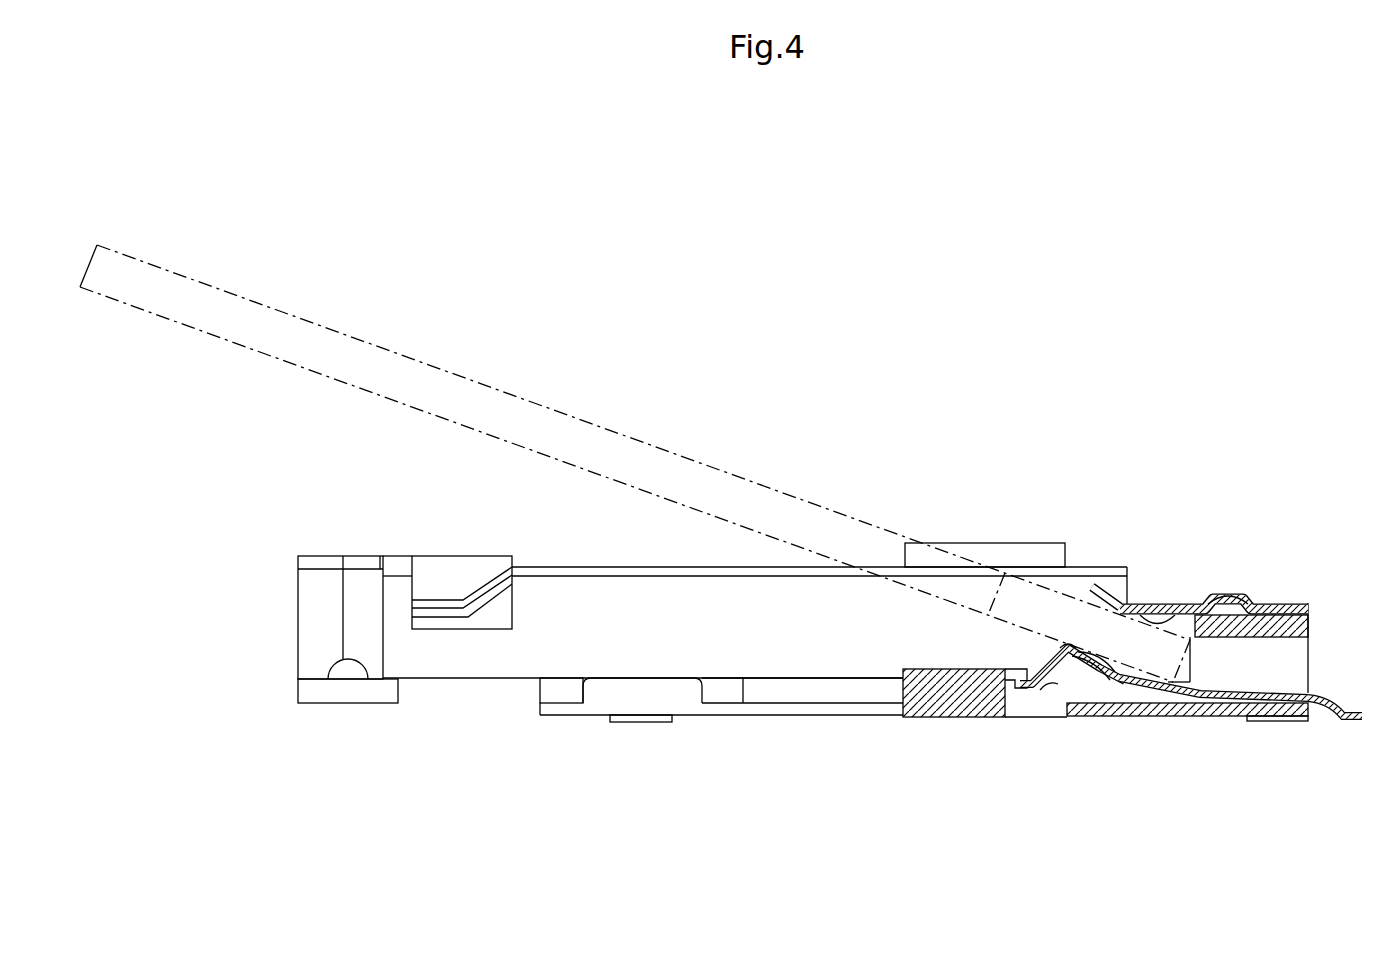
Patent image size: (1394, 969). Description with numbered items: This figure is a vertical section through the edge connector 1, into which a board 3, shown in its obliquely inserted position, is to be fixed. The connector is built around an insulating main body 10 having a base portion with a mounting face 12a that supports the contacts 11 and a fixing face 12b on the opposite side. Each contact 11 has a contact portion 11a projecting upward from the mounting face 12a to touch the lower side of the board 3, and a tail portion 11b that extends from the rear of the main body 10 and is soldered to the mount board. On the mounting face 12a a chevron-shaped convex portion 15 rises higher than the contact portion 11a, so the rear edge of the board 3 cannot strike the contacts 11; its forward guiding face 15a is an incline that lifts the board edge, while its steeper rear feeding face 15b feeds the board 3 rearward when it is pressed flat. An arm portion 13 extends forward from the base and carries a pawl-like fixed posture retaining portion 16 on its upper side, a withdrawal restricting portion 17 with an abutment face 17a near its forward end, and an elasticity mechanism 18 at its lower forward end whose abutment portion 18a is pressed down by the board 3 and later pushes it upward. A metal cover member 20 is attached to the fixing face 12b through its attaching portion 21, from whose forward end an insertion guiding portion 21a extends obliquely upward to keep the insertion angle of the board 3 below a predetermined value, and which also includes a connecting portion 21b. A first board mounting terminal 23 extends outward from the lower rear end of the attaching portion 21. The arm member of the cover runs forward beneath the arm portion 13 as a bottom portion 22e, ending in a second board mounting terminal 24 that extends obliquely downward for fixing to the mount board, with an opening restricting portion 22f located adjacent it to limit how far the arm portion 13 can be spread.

The edge connector 1 is at (1242, 437).
The board 3 is at (563, 417).
The main body 10 is at (1218, 716).
The contact 11 is at (1148, 705).
The contact portion 11a is at (1050, 692).
The tail portion 11b is at (1355, 722).
The mounting face 12a is at (930, 668).
The fixing face 12b is at (1290, 605).
The arm portion 13 is at (640, 610).
The convex portion 15 is at (1045, 640).
The guiding face 15a is at (1025, 657).
The feeding face 15b is at (1105, 700).
The fixed posture retaining portion 16 is at (440, 628).
The withdrawal restricting portion 17 is at (307, 600).
The abutment face 17a is at (360, 598).
The elasticity mechanism 18 is at (339, 707).
The abutment portion 18a is at (342, 672).
The cover member 20 is at (1268, 600).
The attaching portion 21 is at (1256, 596).
The insertion guiding portion 21a is at (1107, 590).
The connecting portion 21b is at (1150, 605).
The bottom portion 22e is at (793, 705).
The opening restricting portion 22f is at (565, 690).
The first board mounting terminal 23 is at (1272, 722).
The second board mounting terminal 24 is at (652, 724).